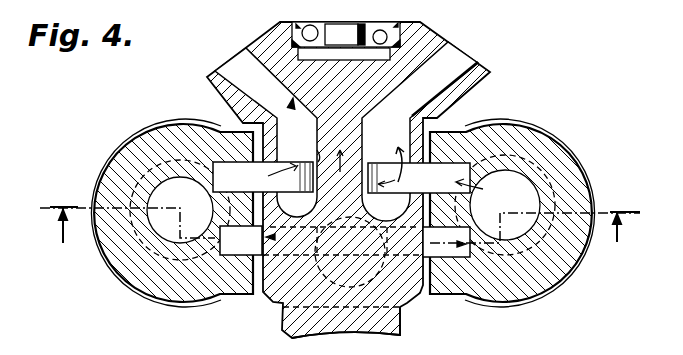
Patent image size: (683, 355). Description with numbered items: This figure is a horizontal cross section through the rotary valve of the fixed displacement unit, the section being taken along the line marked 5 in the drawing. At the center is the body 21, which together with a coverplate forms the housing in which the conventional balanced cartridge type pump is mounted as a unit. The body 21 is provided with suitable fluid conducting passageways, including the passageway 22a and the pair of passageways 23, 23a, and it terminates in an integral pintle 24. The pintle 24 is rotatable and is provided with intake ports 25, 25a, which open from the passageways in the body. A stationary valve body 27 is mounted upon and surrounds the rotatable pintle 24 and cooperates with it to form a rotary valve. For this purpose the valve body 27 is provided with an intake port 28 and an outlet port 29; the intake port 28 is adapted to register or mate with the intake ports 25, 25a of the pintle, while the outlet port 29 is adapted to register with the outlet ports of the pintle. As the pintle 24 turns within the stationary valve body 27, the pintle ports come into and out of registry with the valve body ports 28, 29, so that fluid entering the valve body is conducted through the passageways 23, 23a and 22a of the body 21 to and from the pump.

The body 21 is at (425, 28).
The fluid conducting passageway 22a is at (272, 302).
The fluid conducting passageway 23 is at (452, 50).
The fluid conducting passageway 23a is at (240, 52).
The integral pintle 24 is at (406, 306).
The intake port 25 is at (388, 160).
The intake port 25a is at (313, 155).
The stationary valve body 27 is at (498, 290).
The intake port 28 is at (362, 179).
The outlet port 29 is at (200, 238).
The section line 5- 5 is at (335, 228).